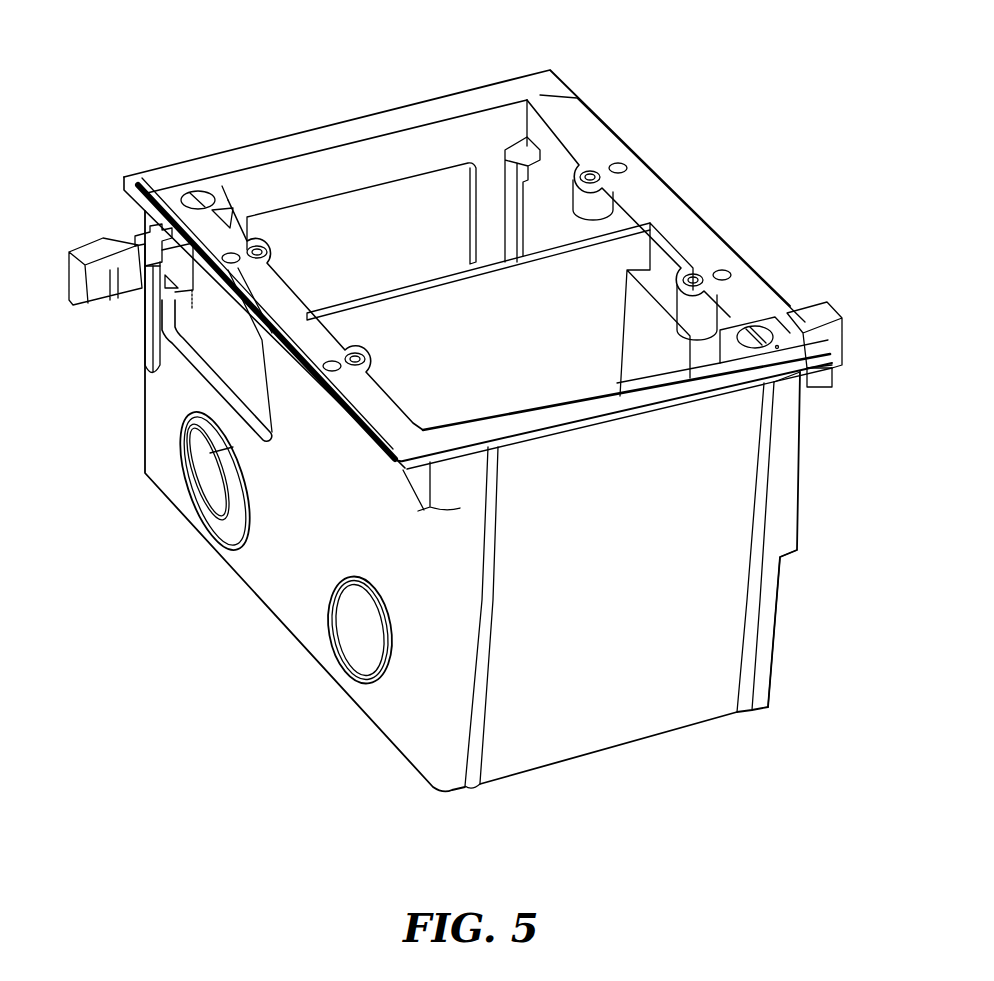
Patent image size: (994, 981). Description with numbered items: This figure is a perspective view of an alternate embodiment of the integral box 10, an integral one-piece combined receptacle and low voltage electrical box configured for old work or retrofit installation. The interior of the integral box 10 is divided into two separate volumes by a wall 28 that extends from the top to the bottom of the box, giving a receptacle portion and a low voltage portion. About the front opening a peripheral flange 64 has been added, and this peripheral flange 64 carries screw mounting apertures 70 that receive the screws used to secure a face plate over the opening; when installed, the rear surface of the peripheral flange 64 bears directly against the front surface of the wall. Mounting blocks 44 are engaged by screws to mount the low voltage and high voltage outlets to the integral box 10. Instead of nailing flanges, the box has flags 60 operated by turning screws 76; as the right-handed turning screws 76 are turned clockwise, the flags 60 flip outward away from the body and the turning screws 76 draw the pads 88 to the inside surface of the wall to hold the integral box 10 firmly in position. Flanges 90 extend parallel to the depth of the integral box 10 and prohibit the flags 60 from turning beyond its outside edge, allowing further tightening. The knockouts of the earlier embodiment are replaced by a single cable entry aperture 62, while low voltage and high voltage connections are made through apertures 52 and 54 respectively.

The integral box 10 is at (195, 655).
The wall 28 is at (533, 341).
The mounting blocks 44 is at (262, 247).
The aperture 52 is at (440, 190).
The aperture 54 is at (225, 495).
The flags 60 is at (100, 322).
The cable entry aperture 62 is at (357, 640).
The peripheral flange 64 is at (372, 125).
The screw mounting apertures 70 is at (233, 250).
The turning screws 76 is at (190, 197).
The pads 88 is at (105, 245).
The flanges 90 is at (143, 352).